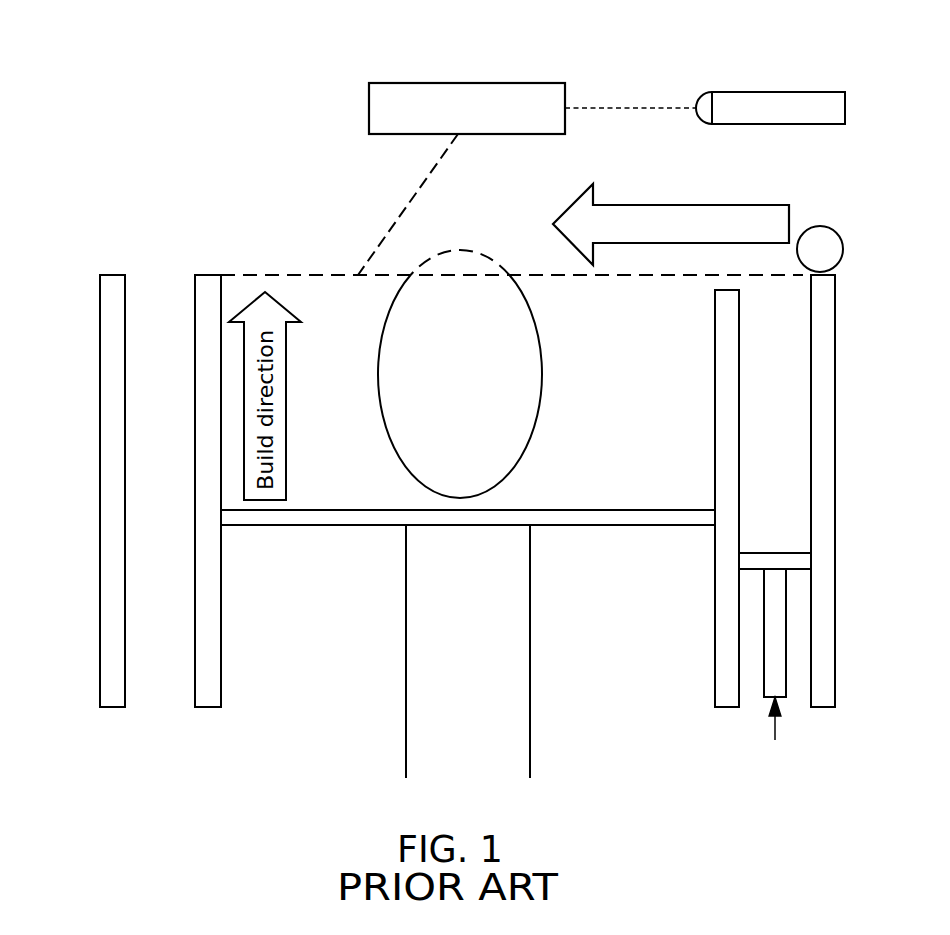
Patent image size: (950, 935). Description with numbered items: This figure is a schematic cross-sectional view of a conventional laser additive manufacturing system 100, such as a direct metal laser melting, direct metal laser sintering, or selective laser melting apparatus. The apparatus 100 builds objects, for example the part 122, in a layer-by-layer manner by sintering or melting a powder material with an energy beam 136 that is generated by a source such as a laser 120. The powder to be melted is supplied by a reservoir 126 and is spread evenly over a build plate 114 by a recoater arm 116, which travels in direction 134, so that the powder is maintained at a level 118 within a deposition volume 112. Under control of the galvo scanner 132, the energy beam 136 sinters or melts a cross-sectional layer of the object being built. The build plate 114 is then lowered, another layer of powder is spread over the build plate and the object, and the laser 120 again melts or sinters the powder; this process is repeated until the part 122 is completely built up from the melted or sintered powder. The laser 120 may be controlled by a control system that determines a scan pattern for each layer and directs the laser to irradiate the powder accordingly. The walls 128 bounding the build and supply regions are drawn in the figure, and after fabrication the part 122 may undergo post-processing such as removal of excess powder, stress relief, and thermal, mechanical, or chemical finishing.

The laser additive manufacturing system 100 is at (138, 60).
The deposition volume 112 is at (536, 290).
The build plate 114 is at (600, 509).
The recoater arm 116 is at (820, 226).
The level 118 is at (268, 274).
The laser 120 is at (778, 92).
The part 122 is at (545, 373).
The reservoir 126 is at (793, 340).
The build chamber walls 128 is at (177, 611).
The galvo scanner 132 is at (467, 82).
The direction 134 is at (569, 200).
The energy beam 136 is at (412, 192).